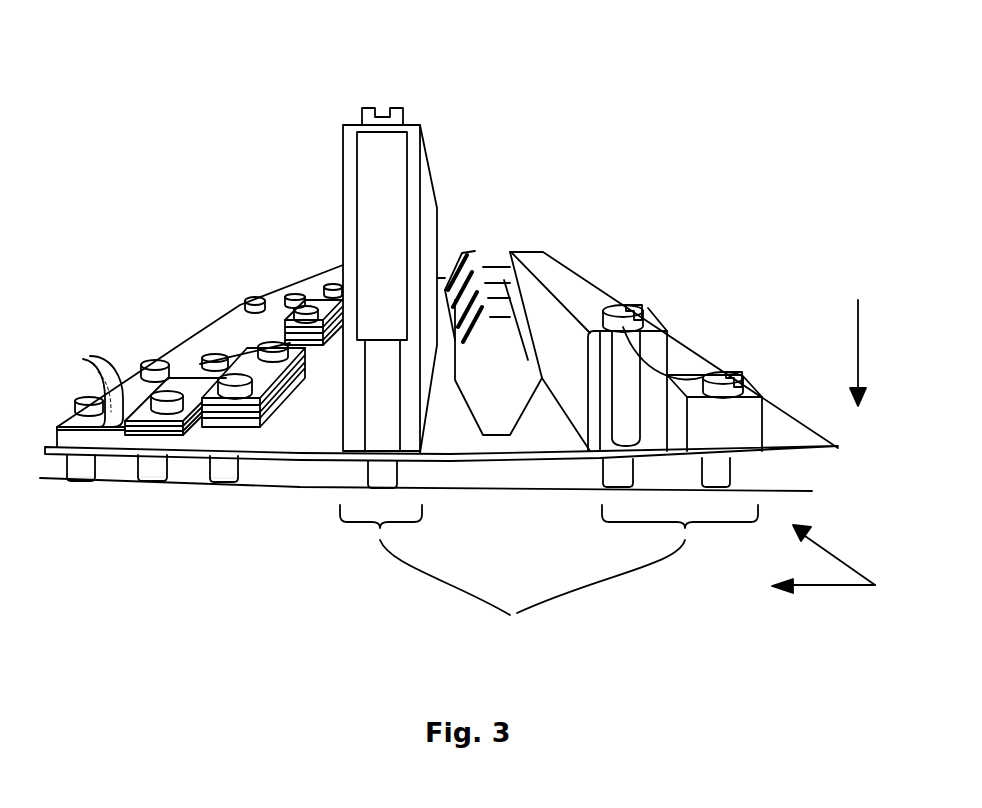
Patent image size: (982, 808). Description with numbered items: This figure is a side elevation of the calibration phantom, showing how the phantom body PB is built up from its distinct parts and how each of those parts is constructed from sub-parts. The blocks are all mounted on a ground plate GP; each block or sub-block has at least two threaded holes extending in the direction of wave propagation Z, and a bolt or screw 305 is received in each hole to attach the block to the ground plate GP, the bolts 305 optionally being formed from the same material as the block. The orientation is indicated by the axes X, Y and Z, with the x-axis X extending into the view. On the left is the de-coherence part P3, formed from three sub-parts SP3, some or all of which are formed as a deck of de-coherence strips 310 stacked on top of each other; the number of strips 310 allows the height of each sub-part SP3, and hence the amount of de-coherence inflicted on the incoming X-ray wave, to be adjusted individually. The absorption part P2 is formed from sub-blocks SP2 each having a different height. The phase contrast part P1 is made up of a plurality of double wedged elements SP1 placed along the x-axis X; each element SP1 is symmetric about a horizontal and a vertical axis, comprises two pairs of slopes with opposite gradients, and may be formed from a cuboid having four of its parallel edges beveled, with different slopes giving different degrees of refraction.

The phantom body PB is at (257, 133).
The ground plate GP is at (303, 473).
The de-coherence part P3 is at (157, 305).
The de-coherence strips 310 is at (83, 359).
The de-coherence sub-part SP3 is at (80, 437).
The absorption sub-part SP2 is at (419, 128).
The bolt or screw 305 is at (273, 350).
The phase contrast part P1 is at (533, 180).
The double wedged element SP1 is at (490, 340).
The absorption part P2 is at (549, 577).
The direction of wave propagation Z is at (865, 353).
The x-axis X is at (834, 555).
The y-axis Y is at (823, 599).